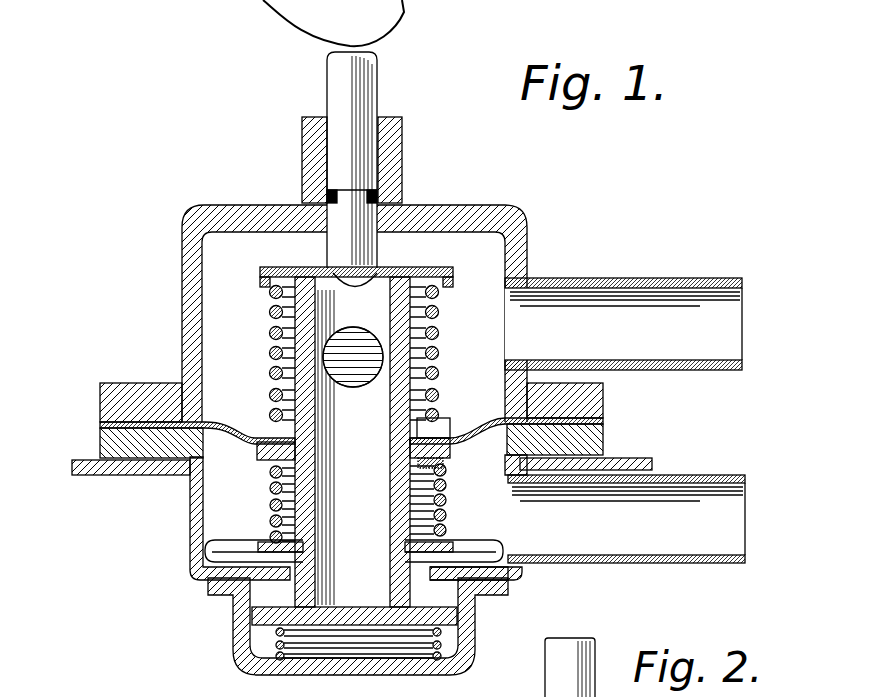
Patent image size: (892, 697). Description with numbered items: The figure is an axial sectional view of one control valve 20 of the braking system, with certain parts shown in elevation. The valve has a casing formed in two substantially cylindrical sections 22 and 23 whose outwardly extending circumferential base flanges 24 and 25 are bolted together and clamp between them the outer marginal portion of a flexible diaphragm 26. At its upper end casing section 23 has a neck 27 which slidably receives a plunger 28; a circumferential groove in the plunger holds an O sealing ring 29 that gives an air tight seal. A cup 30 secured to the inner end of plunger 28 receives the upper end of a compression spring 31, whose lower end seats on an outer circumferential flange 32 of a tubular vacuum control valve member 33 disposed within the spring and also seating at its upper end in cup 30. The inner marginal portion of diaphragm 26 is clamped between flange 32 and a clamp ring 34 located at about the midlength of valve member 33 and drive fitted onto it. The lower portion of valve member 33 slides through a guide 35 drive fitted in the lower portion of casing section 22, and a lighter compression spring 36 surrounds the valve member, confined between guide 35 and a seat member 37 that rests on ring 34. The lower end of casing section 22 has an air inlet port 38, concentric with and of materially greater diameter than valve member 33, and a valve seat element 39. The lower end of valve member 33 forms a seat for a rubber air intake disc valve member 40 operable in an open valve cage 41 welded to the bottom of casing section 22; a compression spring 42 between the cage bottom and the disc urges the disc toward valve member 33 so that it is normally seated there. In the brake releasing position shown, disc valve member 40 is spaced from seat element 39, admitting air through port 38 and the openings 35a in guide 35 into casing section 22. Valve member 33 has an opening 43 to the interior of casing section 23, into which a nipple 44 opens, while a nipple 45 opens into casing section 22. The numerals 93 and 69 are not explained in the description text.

In FIG. 1, the control valve 20 is at (528, 210).
In FIG. 1, the casing section 22 is at (190, 518).
In FIG. 1, the casing section 23 is at (188, 298).
In FIG. 1, the base flange 24 is at (100, 432).
In FIG. 1, the base flange 25 is at (100, 388).
In FIG. 1, the flexible diaphragm 26 is at (238, 437).
In FIG. 1, the neck 27 is at (302, 148).
In FIG. 1, the plunger 28 is at (338, 78).
In FIG. 1, the O sealing ring 29 is at (400, 194).
In FIG. 1, the cup 30 is at (262, 277).
In FIG. 1, the compression spring 31 is at (270, 312).
In FIG. 1, the outer circumferential flange 32 is at (445, 420).
In FIG. 1, the tubular vacuum control valve member 33 is at (423, 327).
In FIG. 1, the clamp ring 34 is at (258, 458).
In FIG. 1, the guide 35 is at (276, 542).
In FIG. 1, the openings 35a is at (472, 543).
In FIG. 1, the compression spring 36 is at (448, 490).
In FIG. 1, the seat member 37 is at (445, 463).
In FIG. 1, the air inlet port 38 is at (410, 575).
In FIG. 1, the valve seat element 39 is at (440, 588).
In FIG. 1, the air intake disc valve member 40 is at (235, 615).
In FIG. 1, the valve cage 41 is at (260, 640).
In FIG. 1, the compression spring 42 is at (258, 675).
In FIG. 1, the opening 43 is at (372, 382).
In FIG. 1, the nipple 44 is at (682, 278).
In FIG. 1, the nipple 45 is at (702, 475).
In FIG. 1, the plate 93 is at (640, 458).
In FIG. 2, the stem 69 is at (548, 678).